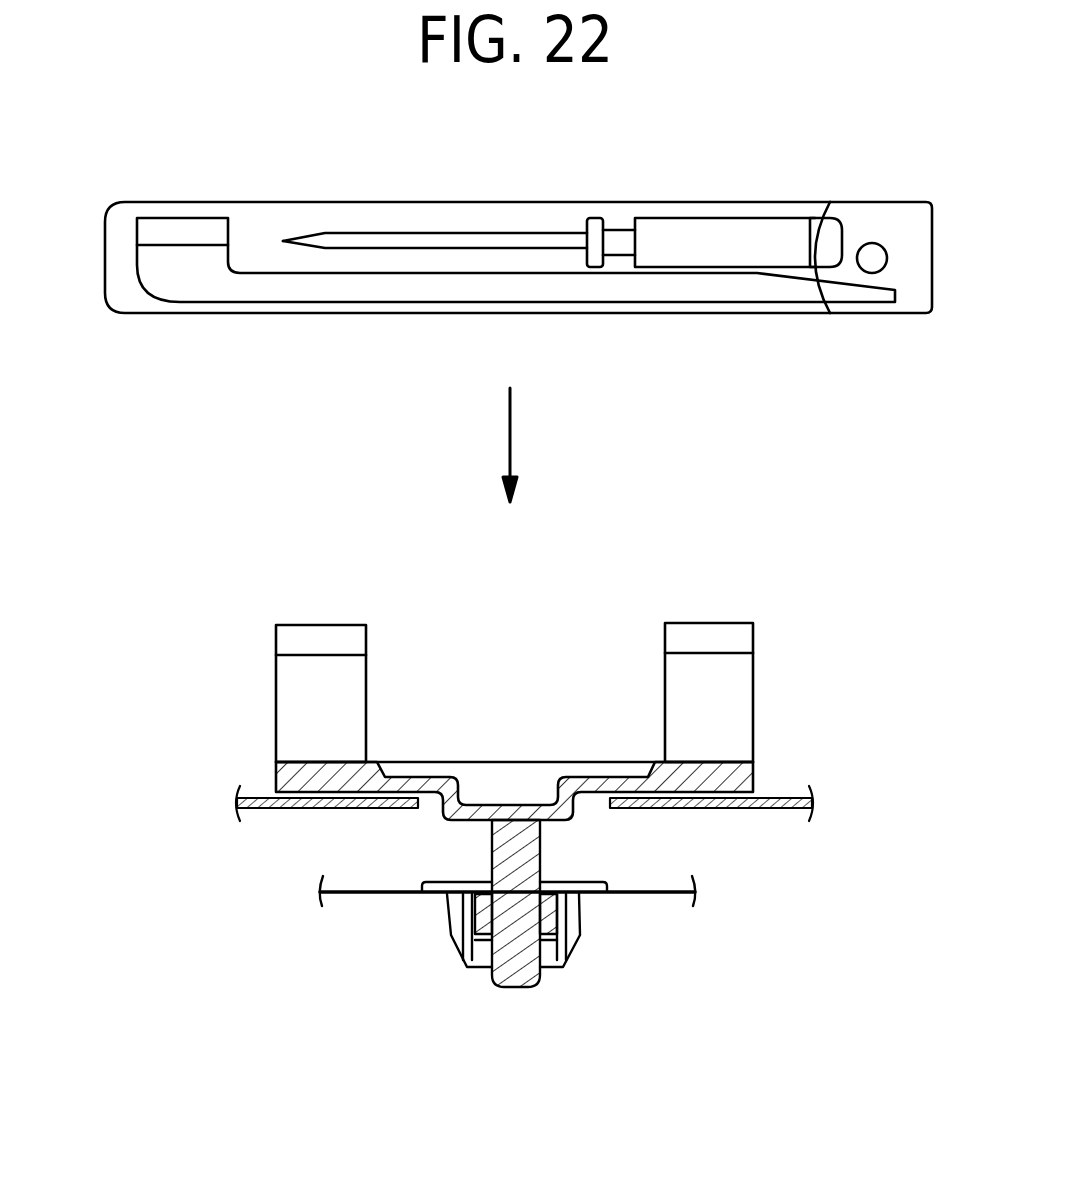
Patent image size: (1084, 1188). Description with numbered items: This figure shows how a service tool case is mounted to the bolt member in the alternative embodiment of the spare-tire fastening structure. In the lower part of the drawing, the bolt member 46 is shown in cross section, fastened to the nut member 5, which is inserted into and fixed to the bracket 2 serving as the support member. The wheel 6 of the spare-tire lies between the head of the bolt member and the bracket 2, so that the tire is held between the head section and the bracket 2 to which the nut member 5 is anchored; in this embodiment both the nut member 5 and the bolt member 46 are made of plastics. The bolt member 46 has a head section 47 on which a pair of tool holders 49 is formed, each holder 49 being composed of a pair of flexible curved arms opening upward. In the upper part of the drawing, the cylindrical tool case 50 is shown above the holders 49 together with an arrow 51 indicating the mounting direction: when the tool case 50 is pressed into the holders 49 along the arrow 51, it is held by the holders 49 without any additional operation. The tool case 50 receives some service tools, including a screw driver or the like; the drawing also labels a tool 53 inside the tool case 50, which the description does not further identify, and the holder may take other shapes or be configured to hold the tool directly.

The bracket 2 is at (380, 893).
The nut member 5 is at (605, 937).
The wheel 6 is at (707, 808).
The bolt member 46 is at (252, 760).
The head section 47 is at (603, 788).
The tool holders 49 is at (320, 670).
The tool case 50 is at (667, 313).
The arrow 51 is at (510, 443).
The needle connector 53 is at (685, 233).